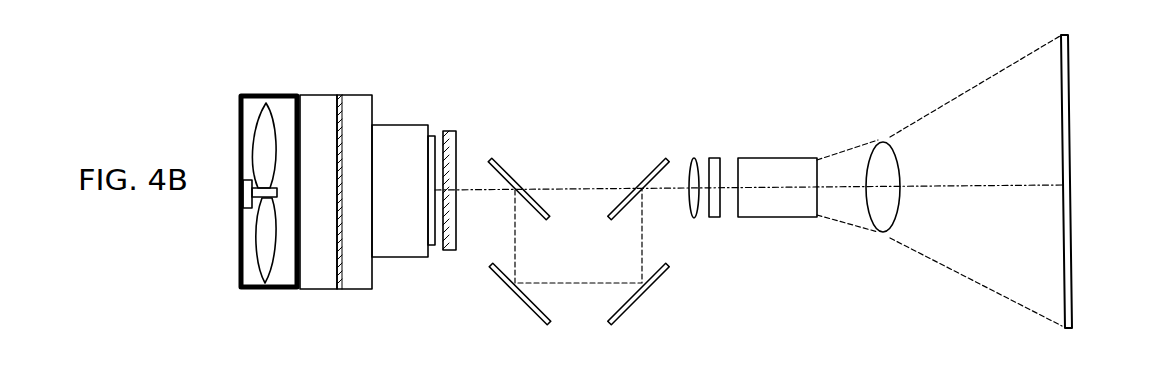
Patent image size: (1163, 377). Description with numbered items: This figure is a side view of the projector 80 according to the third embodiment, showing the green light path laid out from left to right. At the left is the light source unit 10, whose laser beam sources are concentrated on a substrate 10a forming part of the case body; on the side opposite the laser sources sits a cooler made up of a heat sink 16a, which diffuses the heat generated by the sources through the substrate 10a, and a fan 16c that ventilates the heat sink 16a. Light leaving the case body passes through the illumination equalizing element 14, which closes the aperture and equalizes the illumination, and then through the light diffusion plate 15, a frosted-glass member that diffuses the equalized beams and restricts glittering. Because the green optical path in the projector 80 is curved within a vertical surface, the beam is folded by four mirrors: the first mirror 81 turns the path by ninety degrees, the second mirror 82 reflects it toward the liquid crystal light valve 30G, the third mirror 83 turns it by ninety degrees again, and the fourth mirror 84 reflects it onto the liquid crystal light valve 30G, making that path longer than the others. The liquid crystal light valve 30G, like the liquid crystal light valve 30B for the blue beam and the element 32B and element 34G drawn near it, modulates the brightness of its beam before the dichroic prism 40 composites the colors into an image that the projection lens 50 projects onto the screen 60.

The light source unit 10 is at (402, 258).
The substrate 10a is at (365, 290).
The illumination equalizing element 14 is at (430, 246).
The light diffusion plate 15 is at (452, 251).
The heat sink 16a is at (325, 290).
The fan 16c is at (258, 291).
The liquid crystal light valve 30G is at (714, 218).
The liquid crystal light valve 30B is at (768, 5).
The light modulation element 32B is at (490, 5).
The field lens 34G is at (693, 157).
The dichroic prism 40 is at (777, 218).
The projection lens 50 is at (883, 228).
The screen 60 is at (1072, 278).
The projector 80 is at (1093, 50).
The first mirror 81 is at (538, 196).
The second mirror 82 is at (517, 300).
The third mirror 83 is at (642, 300).
The fourth mirror 84 is at (623, 198).